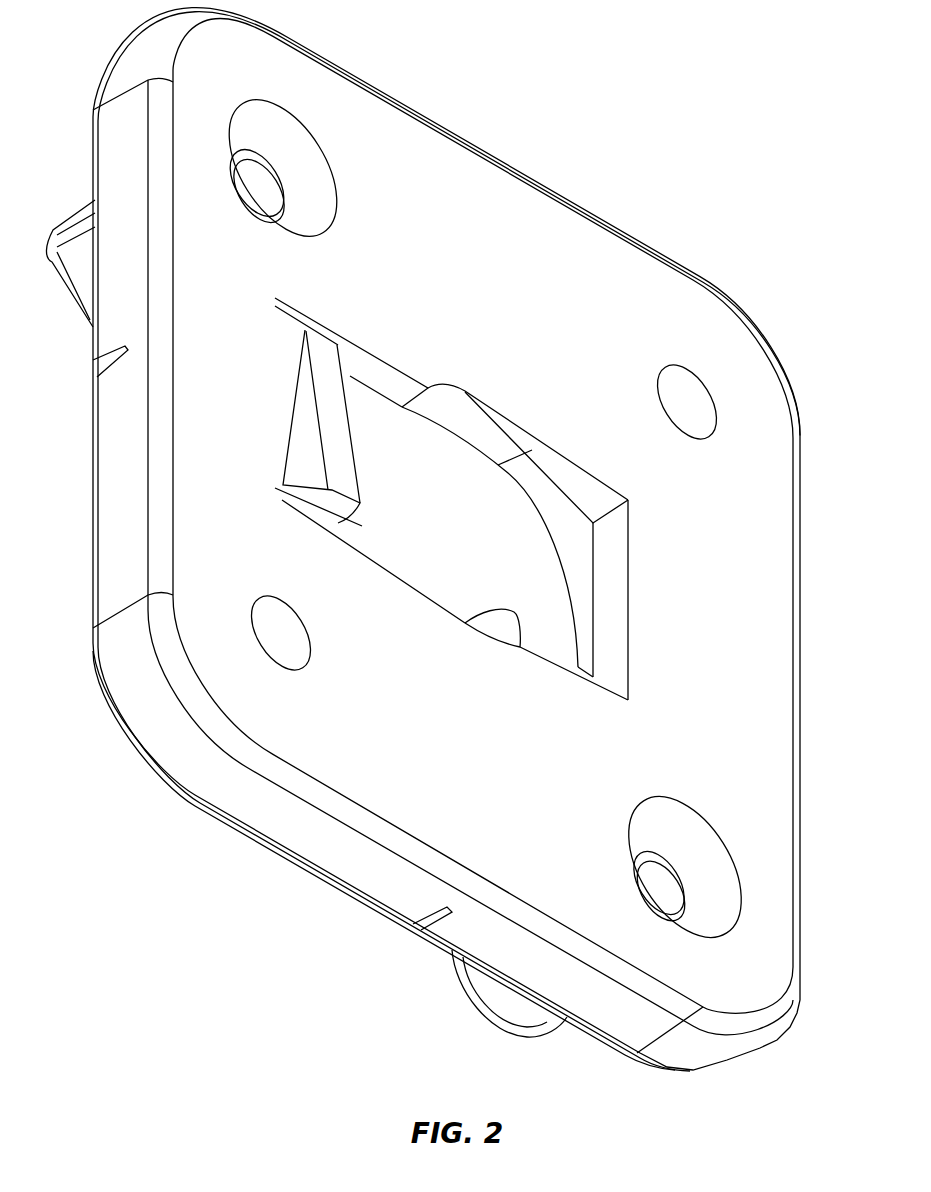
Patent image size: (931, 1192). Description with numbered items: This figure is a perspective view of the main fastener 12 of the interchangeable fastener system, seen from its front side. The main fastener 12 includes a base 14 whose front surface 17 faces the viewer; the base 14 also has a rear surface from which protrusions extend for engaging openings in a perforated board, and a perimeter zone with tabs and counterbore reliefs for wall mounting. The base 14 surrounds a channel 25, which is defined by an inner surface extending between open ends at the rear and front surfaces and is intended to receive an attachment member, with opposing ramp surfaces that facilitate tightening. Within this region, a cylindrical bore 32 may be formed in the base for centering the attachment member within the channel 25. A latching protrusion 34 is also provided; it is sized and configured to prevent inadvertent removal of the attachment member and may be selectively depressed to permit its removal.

The main fastener 12 is at (715, 245).
The base 14 is at (490, 152).
The front surface 17 is at (372, 782).
The channel 25 is at (471, 541).
The cylindrical bore 32 is at (466, 402).
The latching protrusion 34 is at (353, 453).